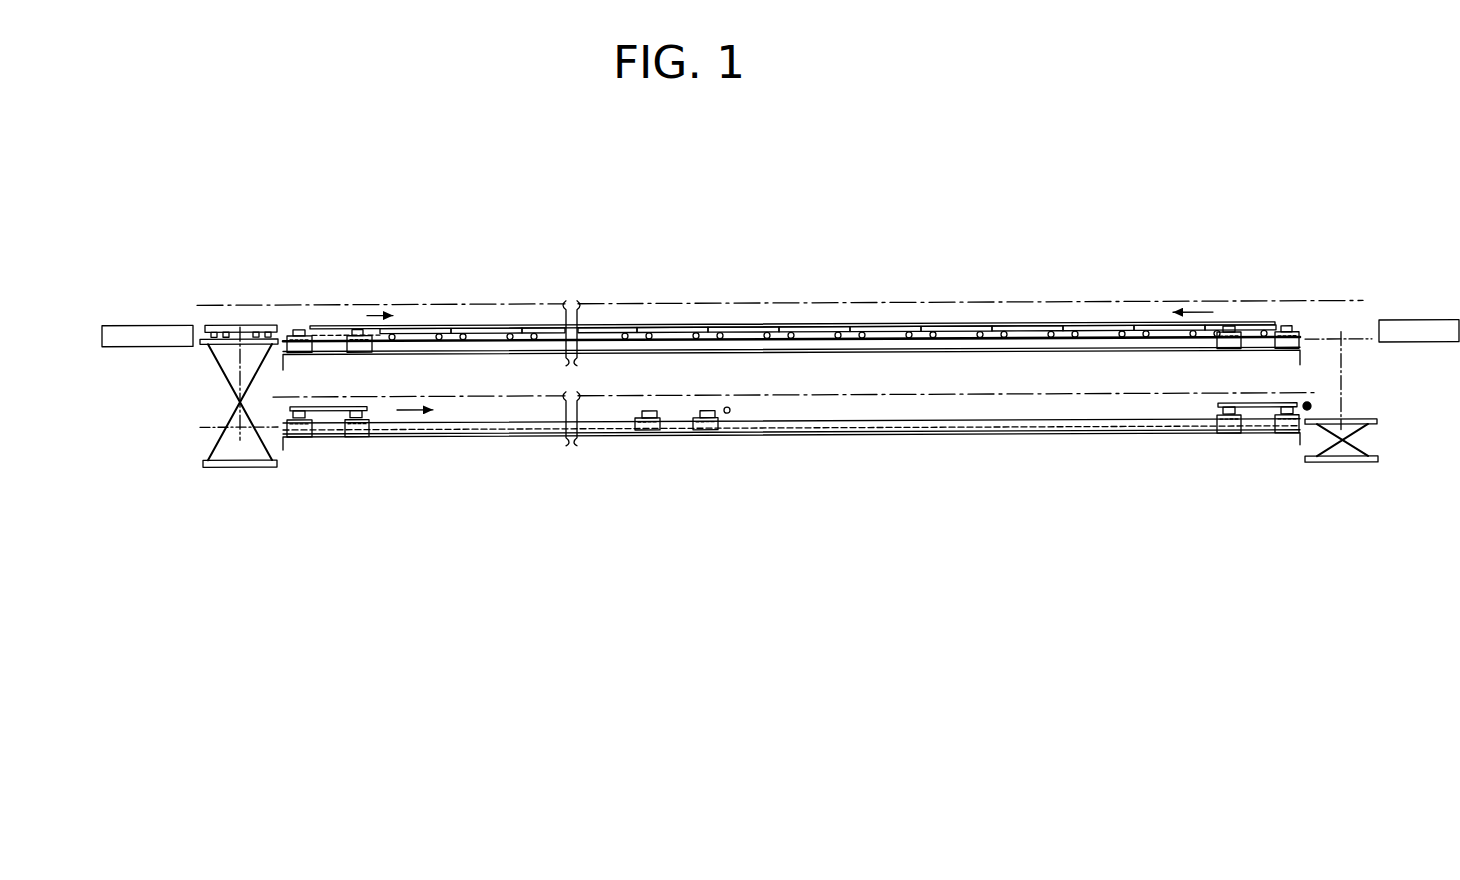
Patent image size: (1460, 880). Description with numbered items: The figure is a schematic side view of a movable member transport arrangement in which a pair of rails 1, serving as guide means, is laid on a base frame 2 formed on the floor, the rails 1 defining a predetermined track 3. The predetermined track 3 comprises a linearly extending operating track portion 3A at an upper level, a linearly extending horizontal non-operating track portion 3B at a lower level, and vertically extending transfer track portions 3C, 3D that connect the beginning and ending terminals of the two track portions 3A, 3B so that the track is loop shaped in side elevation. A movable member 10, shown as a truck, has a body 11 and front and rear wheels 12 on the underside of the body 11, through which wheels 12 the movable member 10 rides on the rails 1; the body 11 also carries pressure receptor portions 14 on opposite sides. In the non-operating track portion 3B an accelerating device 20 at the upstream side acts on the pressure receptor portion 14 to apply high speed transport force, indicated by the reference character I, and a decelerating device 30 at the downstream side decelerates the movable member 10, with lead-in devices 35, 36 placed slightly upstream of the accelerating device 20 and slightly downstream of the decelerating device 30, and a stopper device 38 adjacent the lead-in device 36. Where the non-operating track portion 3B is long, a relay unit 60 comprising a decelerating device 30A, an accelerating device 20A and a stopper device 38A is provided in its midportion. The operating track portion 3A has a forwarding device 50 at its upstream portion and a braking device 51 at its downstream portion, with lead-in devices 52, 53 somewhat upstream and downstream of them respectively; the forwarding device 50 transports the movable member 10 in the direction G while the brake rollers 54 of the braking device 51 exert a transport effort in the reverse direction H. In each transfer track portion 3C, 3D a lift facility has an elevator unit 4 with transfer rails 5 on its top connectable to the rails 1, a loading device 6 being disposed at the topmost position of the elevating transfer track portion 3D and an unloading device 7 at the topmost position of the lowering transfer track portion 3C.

The rails 1 is at (880, 330).
The base frame 2 is at (943, 330).
The predetermined track 3 is at (1148, 306).
The operating track portion 3A is at (812, 302).
The non-operating track portion 3B is at (1075, 401).
The transfer track portion 3C is at (220, 363).
The transfer track portion 3D is at (1343, 374).
The elevator unit 4 is at (200, 345).
The transfer rails 5 is at (237, 325).
The loading device 6 is at (1420, 332).
The unloading device 7 is at (140, 333).
The movable member 10 is at (478, 327).
The body 11 is at (1042, 326).
The wheels 12 is at (1123, 344).
The pressure receptor portion 14 is at (663, 325).
The accelerating device 20 is at (353, 441).
The accelerating device 20A is at (705, 434).
The decelerating device 30 is at (1228, 438).
The decelerating device 30A is at (647, 434).
The lead-in device 35 is at (293, 441).
The lead-in device 36 is at (1287, 438).
The stopper device 38 is at (1314, 415).
The stopper device 38A is at (730, 432).
The forwarding device 50 is at (1232, 351).
The braking device 51 is at (363, 354).
The lead-in device 52 is at (1305, 332).
The lead-in device 53 is at (313, 333).
The brake rollers 54 is at (357, 330).
The relay unit 60 is at (677, 451).
The transport direction on operating track portion G is at (1198, 316).
The reverse direction H is at (378, 308).
The high-speed transport direction I is at (418, 433).